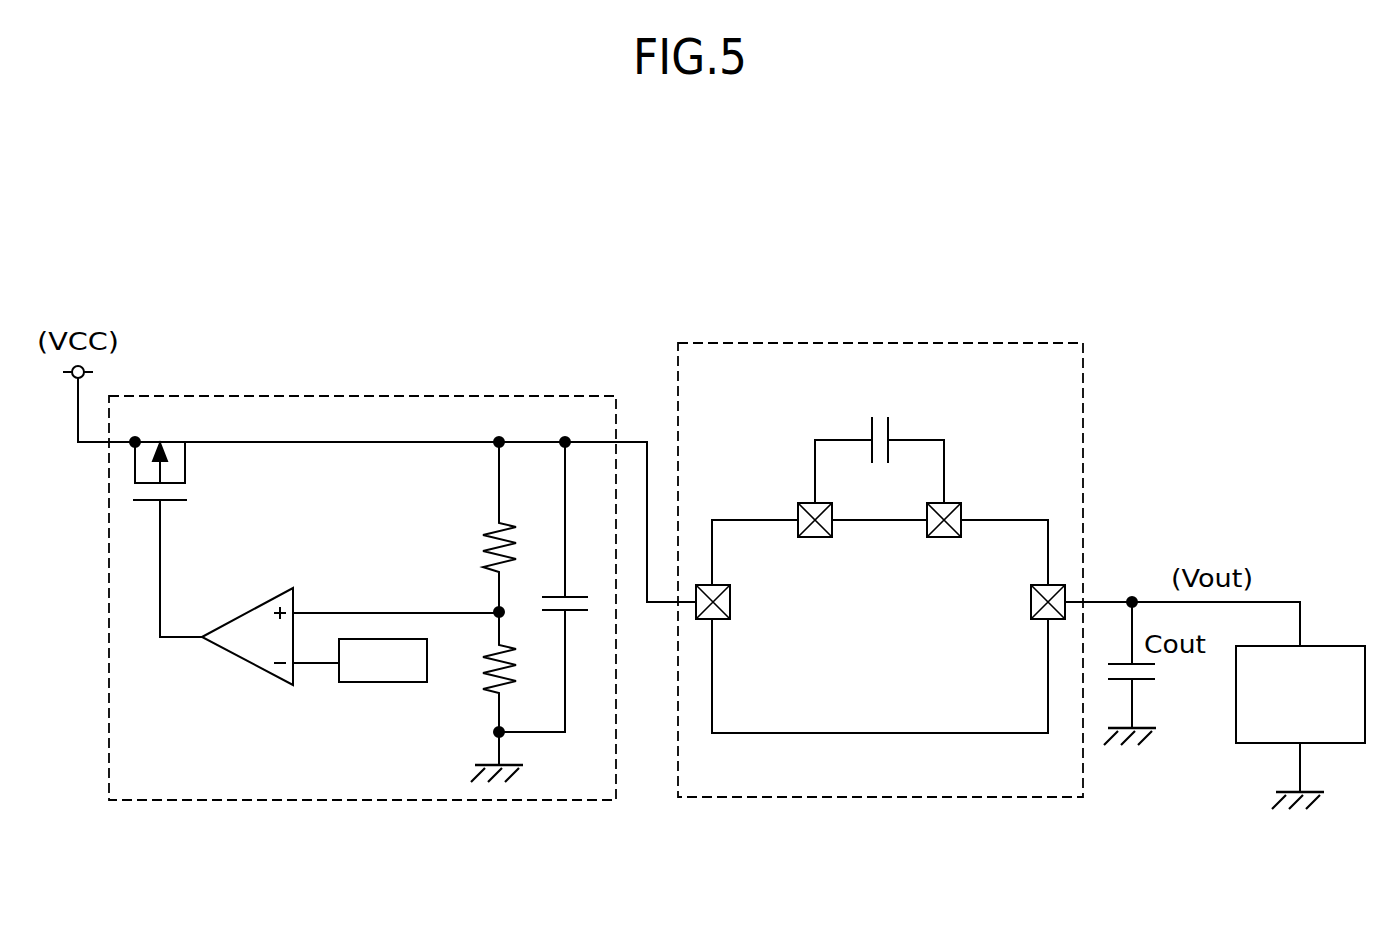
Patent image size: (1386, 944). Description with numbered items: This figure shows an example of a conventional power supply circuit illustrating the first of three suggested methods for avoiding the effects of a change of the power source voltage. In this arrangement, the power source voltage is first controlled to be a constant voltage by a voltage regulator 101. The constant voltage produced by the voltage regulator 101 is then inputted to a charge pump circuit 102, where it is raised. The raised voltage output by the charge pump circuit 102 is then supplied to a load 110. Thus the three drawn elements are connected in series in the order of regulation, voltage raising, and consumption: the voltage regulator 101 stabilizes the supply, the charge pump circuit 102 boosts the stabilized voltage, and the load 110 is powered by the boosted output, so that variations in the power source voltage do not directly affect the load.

The voltage regulator 101 is at (515, 396).
The charge pump circuit 102 is at (983, 343).
The load 110 is at (1338, 646).